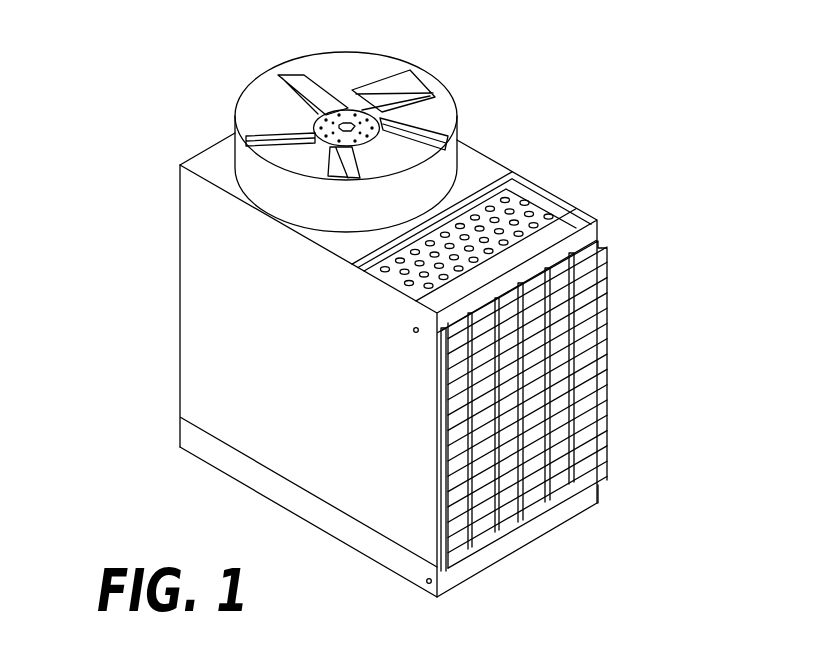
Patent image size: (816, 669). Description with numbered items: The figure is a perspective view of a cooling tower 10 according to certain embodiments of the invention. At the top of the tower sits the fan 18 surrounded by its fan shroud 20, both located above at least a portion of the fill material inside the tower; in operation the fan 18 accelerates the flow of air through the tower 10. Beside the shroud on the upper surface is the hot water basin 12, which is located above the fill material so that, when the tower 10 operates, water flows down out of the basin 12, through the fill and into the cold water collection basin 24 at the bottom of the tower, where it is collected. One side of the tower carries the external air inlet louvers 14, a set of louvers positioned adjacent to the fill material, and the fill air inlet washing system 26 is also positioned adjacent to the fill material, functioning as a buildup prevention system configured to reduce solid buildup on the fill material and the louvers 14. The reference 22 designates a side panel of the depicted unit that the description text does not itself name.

The cooling tower 10 is at (493, 120).
The hot water basin 12 is at (519, 209).
The external air inlet louvers 14 is at (608, 266).
The fan 18 is at (383, 78).
The fan shroud 20 is at (242, 155).
The side panel 22 is at (215, 357).
The cold water collection basin 24 is at (582, 497).
The fill air inlet washing system 26 is at (497, 296).